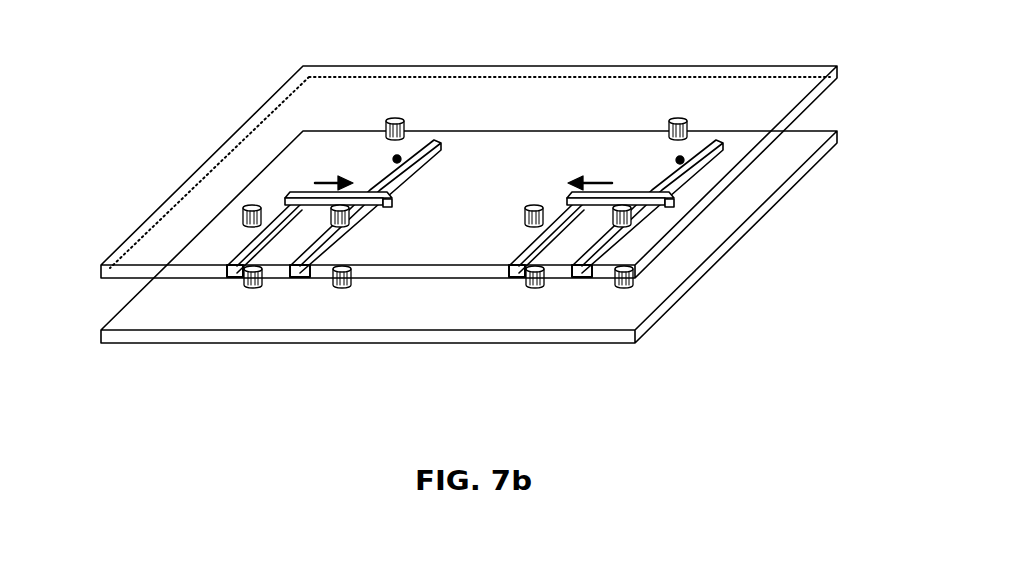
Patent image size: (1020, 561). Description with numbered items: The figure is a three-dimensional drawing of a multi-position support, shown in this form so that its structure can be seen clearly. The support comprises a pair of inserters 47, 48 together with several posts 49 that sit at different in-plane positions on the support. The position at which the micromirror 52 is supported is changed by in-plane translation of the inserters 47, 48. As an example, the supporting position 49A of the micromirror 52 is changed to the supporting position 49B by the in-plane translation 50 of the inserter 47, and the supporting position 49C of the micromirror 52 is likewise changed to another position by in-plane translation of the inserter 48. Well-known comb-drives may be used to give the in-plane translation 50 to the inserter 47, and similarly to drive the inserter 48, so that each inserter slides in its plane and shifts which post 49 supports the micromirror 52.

The inserter 47 is at (294, 207).
The inserter 48 is at (577, 207).
The posts 49 is at (681, 140).
The supporting position 49A is at (252, 228).
The supporting position 49B is at (342, 228).
The supporting position 49C is at (535, 228).
The in-plane translation 50 is at (332, 177).
The micromirror 52 is at (598, 170).